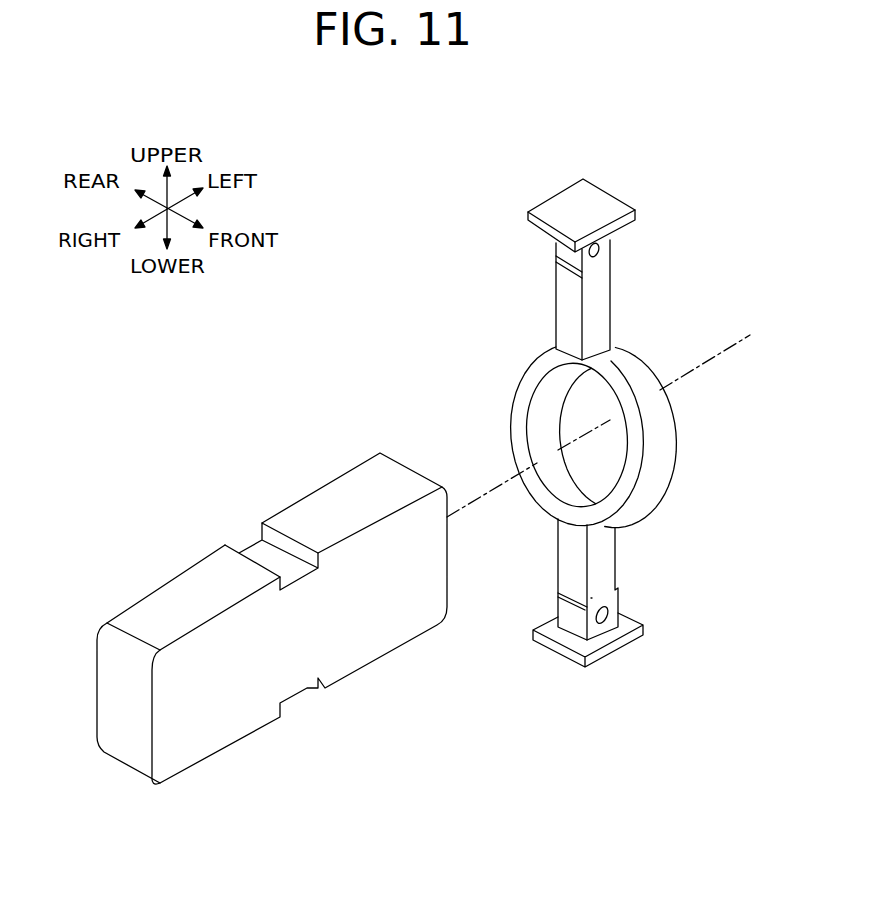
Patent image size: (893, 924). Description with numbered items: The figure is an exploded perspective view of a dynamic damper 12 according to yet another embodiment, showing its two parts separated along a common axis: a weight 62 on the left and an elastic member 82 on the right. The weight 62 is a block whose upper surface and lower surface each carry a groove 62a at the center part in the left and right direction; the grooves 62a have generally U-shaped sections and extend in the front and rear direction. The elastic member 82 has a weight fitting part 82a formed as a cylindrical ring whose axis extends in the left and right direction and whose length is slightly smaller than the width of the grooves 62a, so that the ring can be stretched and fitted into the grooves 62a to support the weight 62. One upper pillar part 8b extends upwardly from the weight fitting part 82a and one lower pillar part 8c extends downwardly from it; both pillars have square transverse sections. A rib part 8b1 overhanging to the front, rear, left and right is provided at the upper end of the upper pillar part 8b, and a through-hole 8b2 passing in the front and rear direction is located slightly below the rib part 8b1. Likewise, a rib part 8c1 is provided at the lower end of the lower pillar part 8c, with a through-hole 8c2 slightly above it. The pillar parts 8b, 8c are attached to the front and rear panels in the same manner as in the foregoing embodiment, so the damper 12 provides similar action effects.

The dynamic damper 12 is at (355, 262).
The weight 62 is at (163, 570).
The grooves 62a is at (258, 555).
The elastic member 82 is at (673, 328).
The weight fitting part 82a is at (677, 430).
The upper pillar part 8b is at (568, 302).
The rib part 8b1 is at (567, 202).
The through-hole 8b2 is at (582, 248).
The lower pillar part 8c is at (572, 555).
The rib part 8c1 is at (558, 647).
The through-hole 8c2 is at (604, 608).